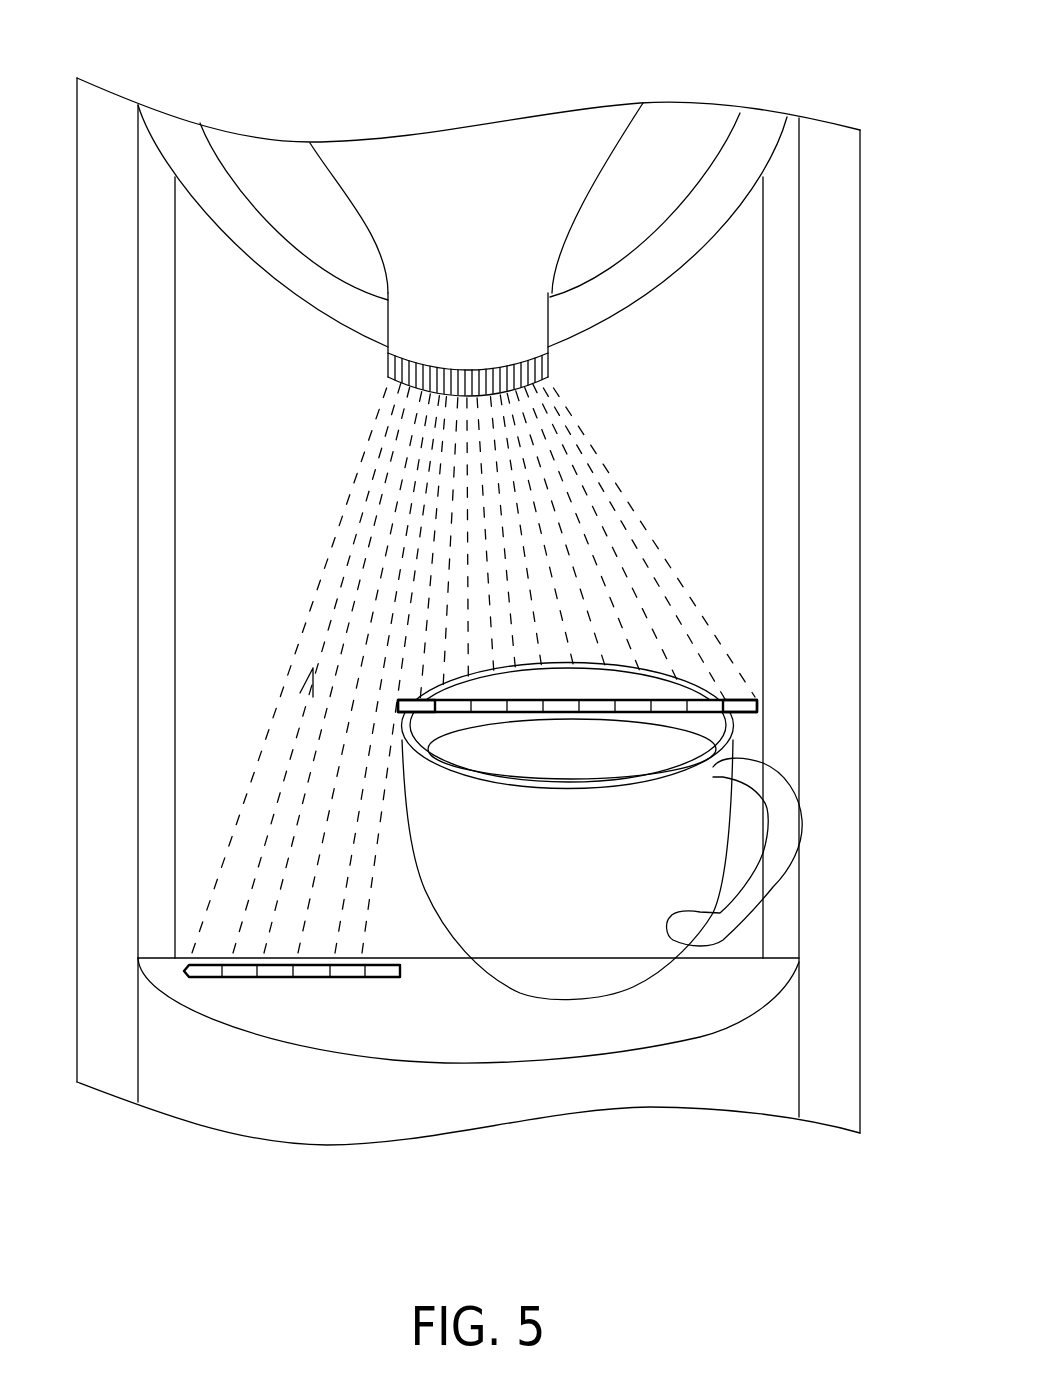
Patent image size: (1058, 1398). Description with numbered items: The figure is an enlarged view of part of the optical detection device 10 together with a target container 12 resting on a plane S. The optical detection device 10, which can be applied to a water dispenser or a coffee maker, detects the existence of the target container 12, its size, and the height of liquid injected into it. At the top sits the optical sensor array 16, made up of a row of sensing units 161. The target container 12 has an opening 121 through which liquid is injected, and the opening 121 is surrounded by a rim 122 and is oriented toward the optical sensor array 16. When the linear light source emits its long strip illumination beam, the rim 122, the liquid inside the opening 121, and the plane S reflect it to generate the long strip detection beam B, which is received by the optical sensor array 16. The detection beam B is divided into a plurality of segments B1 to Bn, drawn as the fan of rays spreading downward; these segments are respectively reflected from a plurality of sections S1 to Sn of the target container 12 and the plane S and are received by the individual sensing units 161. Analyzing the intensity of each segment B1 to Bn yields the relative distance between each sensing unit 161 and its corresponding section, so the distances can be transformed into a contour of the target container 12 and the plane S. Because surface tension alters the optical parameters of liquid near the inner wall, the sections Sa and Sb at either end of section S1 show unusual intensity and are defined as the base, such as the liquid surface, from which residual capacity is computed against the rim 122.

The optical detection device 10 is at (462, 190).
The optical sensor array 16 is at (468, 312).
The sensing unit 161 is at (395, 365).
The long strip detection beam B is at (473, 669).
The first segment of the long strip detection beam B1 is at (607, 468).
The nth segment of the long strip detection beam Bn is at (372, 430).
The plane S is at (578, 1017).
The first section S1 is at (745, 708).
The section Sa is at (713, 700).
The section Sb is at (417, 700).
The nth section Sn is at (210, 977).
The target container 12 is at (602, 831).
The opening 121 is at (593, 753).
The rim 122 is at (498, 780).